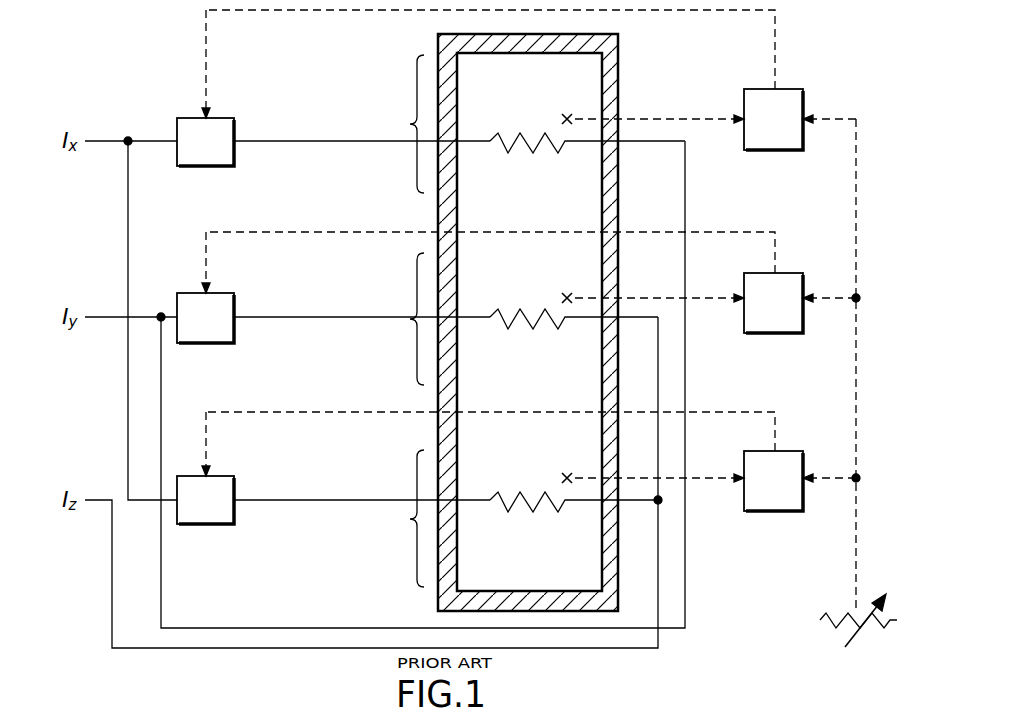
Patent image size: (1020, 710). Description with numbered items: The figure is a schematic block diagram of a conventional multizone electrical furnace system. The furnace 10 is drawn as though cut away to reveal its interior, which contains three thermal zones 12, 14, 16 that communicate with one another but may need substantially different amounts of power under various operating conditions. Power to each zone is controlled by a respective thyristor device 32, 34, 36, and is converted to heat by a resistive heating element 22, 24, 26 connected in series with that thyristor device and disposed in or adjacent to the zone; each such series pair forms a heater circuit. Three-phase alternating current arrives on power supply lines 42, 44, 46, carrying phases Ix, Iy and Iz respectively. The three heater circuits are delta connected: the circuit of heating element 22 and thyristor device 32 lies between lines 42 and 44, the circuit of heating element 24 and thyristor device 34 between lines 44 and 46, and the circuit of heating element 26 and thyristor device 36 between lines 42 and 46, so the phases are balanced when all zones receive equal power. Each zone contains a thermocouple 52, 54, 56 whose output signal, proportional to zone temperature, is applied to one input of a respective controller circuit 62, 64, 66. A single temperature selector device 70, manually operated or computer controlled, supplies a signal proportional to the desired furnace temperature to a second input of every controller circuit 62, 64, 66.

The furnace 10 is at (619, 40).
The thermal zone 12 is at (401, 124).
The thermal zone 14 is at (401, 319).
The thermal zone 16 is at (399, 518).
The resistive heating element 22 is at (510, 119).
The resistive heating element 24 is at (510, 295).
The resistive heating element 26 is at (510, 478).
The thyristor device 32 is at (222, 118).
The thyristor device 34 is at (222, 293).
The thyristor device 36 is at (222, 476).
The power supply line 42 is at (100, 140).
The power supply line 44 is at (95, 316).
The power supply line 46 is at (96, 498).
The thermocouple 52 is at (568, 115).
The thermocouple 54 is at (576, 279).
The thermocouple 56 is at (576, 459).
The controller circuit 62 is at (803, 92).
The controller circuit 64 is at (803, 276).
The controller circuit 66 is at (803, 454).
The temperature selector device 70 is at (880, 625).